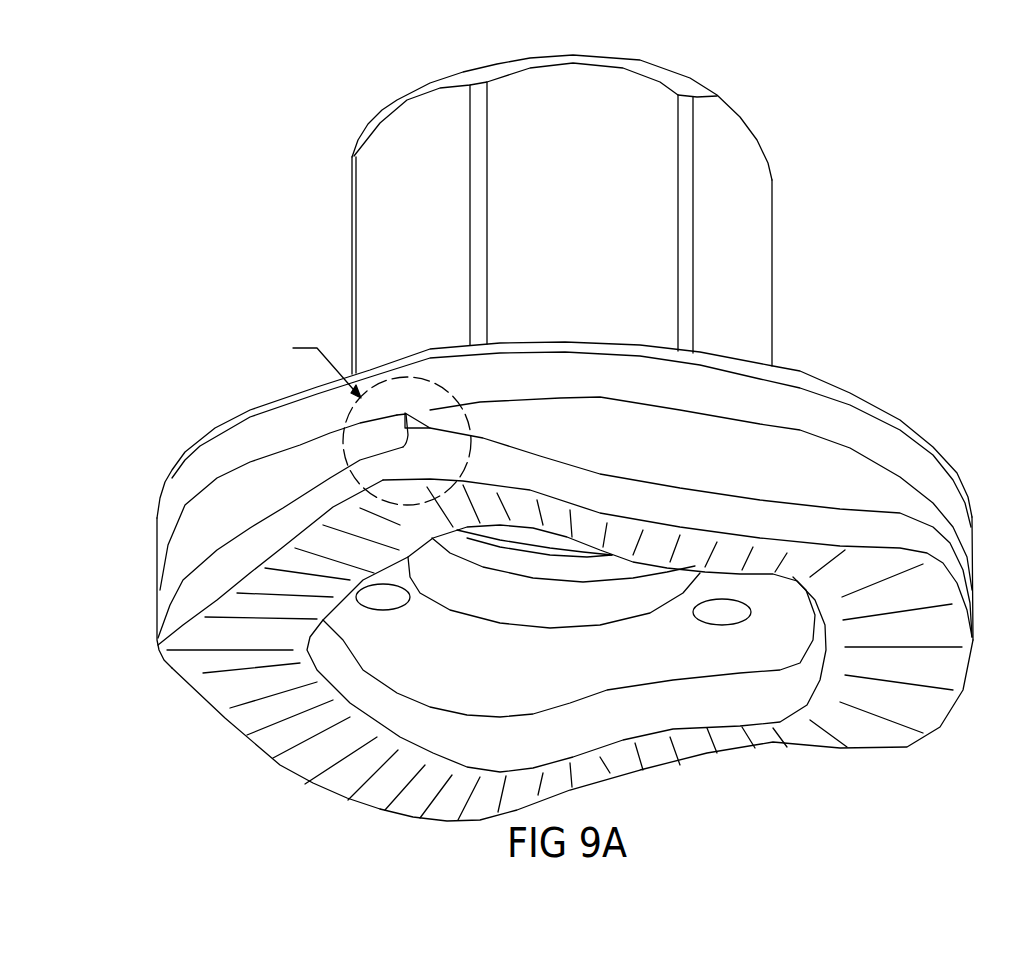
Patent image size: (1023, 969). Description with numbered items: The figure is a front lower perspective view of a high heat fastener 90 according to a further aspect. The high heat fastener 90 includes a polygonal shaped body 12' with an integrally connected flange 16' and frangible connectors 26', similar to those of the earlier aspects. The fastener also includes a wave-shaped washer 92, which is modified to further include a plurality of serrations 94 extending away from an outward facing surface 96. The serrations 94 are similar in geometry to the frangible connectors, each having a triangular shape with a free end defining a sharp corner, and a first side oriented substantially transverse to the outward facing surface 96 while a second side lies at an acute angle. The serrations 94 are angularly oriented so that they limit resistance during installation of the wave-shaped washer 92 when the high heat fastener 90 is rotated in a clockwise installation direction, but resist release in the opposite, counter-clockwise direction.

The polygonal shaped body 12' is at (584, 214).
The integrally connected flange 16' is at (565, 529).
The frangible connectors 26' is at (359, 405).
The high heat fastener 90 is at (865, 295).
The wave-shaped washer 92 is at (887, 530).
The serrations 94 is at (262, 748).
The outward facing surface 96 is at (196, 675).